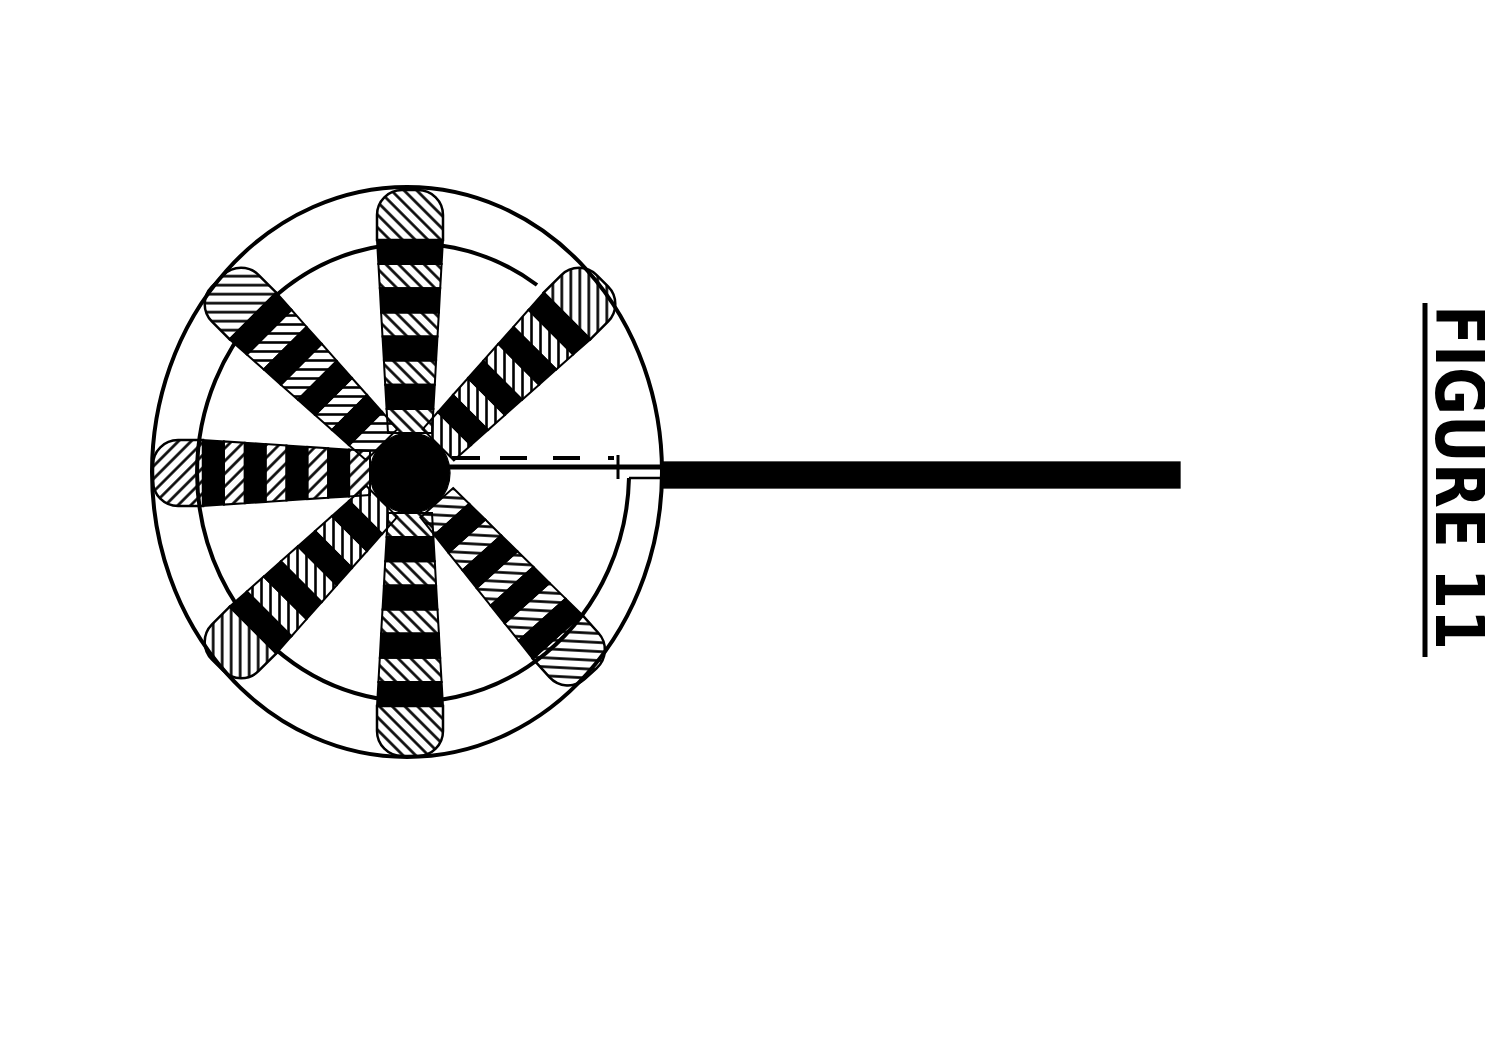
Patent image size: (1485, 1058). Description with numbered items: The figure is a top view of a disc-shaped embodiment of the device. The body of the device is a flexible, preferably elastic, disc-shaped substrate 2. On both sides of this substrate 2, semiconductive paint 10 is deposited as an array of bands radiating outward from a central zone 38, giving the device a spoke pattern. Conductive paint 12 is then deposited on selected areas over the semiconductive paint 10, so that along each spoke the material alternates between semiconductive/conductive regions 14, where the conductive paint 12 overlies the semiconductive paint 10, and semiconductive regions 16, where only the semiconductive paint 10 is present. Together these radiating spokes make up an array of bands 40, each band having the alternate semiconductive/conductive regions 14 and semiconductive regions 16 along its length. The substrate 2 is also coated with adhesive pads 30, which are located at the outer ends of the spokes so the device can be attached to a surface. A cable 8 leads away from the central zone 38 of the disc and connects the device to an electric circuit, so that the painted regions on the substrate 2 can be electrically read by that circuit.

The substrate 2 is at (500, 205).
The cable 8 is at (724, 492).
The semiconductive paint 10 is at (557, 347).
The conductive paint 12 is at (723, 473).
The semiconductive/conductive region 14 is at (392, 515).
The semiconductive region 16 is at (305, 632).
The adhesive pads 30 is at (570, 692).
The central zone 38 is at (420, 518).
The array of bands 40 is at (373, 260).